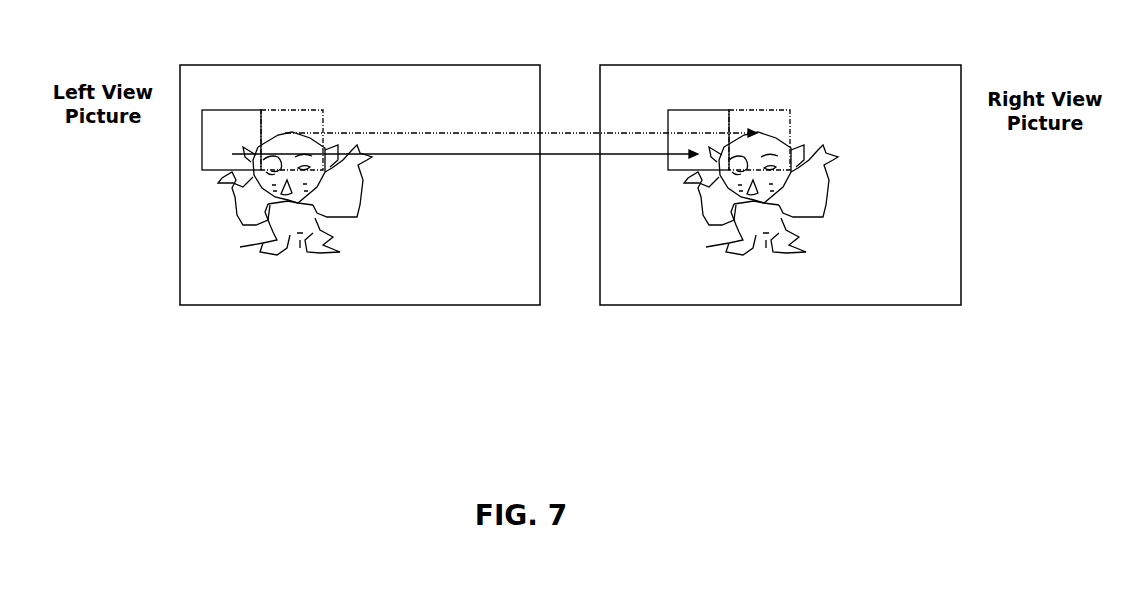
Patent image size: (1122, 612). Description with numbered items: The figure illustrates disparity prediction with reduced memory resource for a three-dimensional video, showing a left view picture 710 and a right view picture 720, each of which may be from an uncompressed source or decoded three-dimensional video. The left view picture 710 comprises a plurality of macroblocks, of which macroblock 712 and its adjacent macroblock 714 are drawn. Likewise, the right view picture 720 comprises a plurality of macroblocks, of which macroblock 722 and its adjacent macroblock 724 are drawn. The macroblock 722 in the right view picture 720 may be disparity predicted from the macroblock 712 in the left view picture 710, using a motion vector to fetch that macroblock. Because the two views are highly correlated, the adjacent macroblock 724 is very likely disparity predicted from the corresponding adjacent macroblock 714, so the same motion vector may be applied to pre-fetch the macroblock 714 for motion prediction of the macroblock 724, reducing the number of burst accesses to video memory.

The left view picture 710 is at (378, 48).
The macroblock 712 is at (220, 108).
The macroblock 714 is at (275, 104).
The right view picture 720 is at (746, 48).
The macroblock 722 is at (698, 108).
The macroblock 724 is at (757, 104).